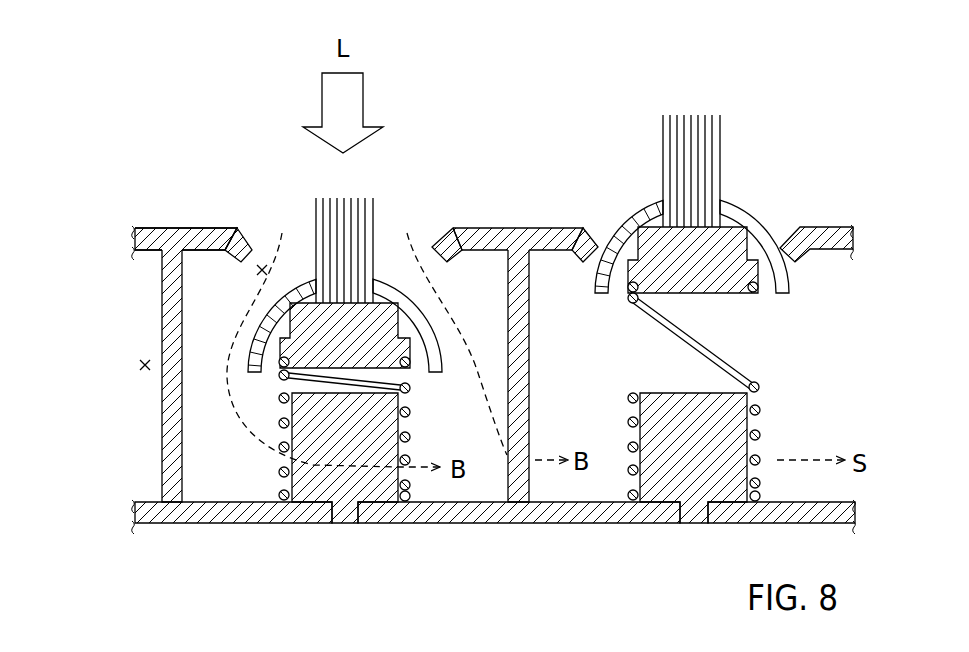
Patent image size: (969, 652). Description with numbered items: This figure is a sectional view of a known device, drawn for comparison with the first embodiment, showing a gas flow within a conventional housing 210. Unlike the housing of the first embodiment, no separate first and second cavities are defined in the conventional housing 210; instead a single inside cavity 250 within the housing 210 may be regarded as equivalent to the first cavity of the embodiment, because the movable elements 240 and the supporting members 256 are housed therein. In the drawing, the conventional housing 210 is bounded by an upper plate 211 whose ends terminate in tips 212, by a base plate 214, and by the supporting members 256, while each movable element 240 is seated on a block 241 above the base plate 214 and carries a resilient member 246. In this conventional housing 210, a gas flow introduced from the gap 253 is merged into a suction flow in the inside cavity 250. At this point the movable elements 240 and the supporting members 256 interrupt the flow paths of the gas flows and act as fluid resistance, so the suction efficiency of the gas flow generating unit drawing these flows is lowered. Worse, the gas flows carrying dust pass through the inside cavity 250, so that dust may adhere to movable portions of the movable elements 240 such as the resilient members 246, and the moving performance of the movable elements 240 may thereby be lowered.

The conventional housing 210 is at (164, 133).
The upper plate 211 is at (190, 228).
The plate tip 212 is at (253, 228).
The base plate 214 is at (244, 515).
The movable element 240 is at (379, 270).
The ferrule block 241 is at (257, 323).
The resilient member 246 is at (409, 394).
The inside cavity 250 is at (142, 365).
The gap 253 is at (260, 273).
The supporting member 256 is at (168, 418).